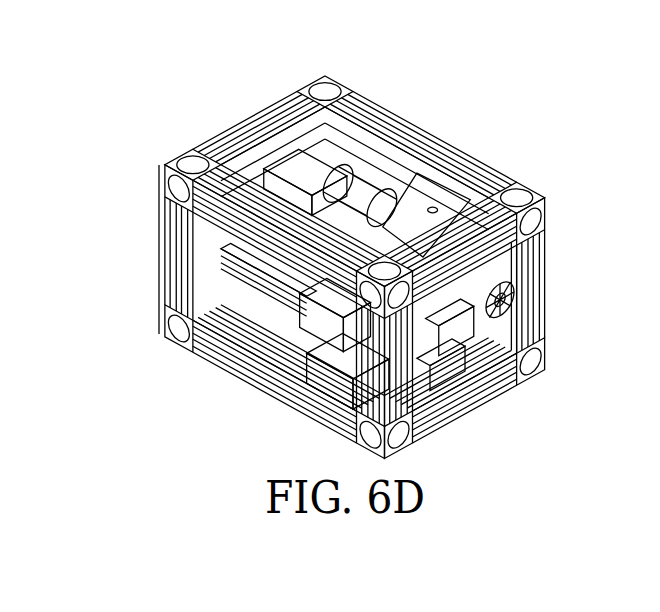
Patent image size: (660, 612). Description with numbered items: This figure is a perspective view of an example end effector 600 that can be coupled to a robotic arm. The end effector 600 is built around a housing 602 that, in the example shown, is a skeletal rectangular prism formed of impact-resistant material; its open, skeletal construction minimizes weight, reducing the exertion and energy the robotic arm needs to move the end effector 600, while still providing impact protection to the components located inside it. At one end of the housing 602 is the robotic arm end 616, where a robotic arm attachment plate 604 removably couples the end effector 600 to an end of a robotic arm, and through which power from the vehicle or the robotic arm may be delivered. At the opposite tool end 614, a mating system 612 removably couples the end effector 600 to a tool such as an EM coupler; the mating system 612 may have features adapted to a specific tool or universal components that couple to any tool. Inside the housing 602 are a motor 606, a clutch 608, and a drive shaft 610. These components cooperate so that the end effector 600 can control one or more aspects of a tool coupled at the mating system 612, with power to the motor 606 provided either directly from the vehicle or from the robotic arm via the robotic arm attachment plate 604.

The end effector 600 is at (145, 122).
The housing 602 is at (487, 168).
The robotic arm attachment plate 604 is at (324, 74).
The motor 606 is at (287, 163).
The clutch 608 is at (360, 213).
The drive shaft 610 is at (483, 317).
The mating system 612 is at (438, 370).
The tool end 614 is at (513, 409).
The robotic arm end 616 is at (144, 278).